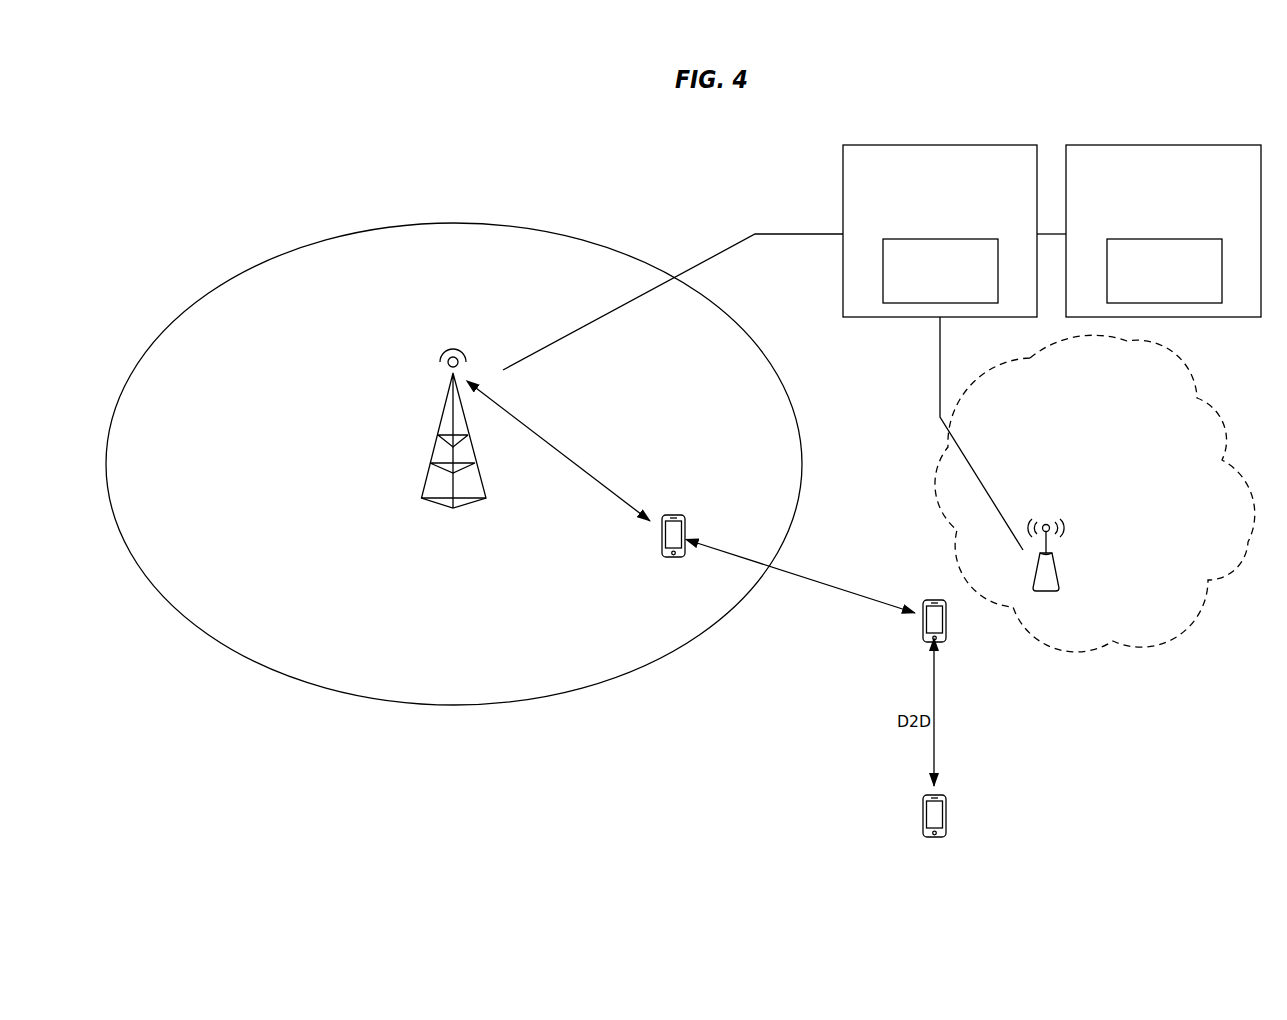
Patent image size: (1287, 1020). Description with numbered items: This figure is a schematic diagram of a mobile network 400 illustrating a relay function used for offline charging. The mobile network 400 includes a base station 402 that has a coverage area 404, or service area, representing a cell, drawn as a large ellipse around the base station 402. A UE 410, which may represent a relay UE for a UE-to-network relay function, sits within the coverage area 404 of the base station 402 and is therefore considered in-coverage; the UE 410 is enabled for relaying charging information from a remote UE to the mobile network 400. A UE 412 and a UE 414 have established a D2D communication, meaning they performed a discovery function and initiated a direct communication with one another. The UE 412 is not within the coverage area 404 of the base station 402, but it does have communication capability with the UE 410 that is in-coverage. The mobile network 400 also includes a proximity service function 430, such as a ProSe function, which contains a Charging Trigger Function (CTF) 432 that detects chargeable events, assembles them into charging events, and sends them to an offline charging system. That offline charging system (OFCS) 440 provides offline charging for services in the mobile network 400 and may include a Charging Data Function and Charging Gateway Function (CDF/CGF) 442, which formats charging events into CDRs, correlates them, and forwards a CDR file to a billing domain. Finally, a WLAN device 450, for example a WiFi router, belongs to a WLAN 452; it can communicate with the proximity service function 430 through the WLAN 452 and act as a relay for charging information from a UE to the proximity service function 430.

The mobile network 400 is at (402, 121).
The base station 402 is at (442, 349).
The coverage area 404 is at (237, 271).
The UE 410 is at (685, 528).
The UE 412 is at (932, 600).
The UE 414 is at (923, 822).
The proximity service function 430 is at (926, 218).
The Charging Trigger Function (CTF) 432 is at (926, 293).
The offline charging system (OFCS) 440 is at (1150, 212).
The Charging Data Function and Charging Gateway Function (CDF/CGF) 442 is at (1150, 293).
The WLAN device 450 is at (1058, 570).
The WLAN 452 is at (1064, 441).